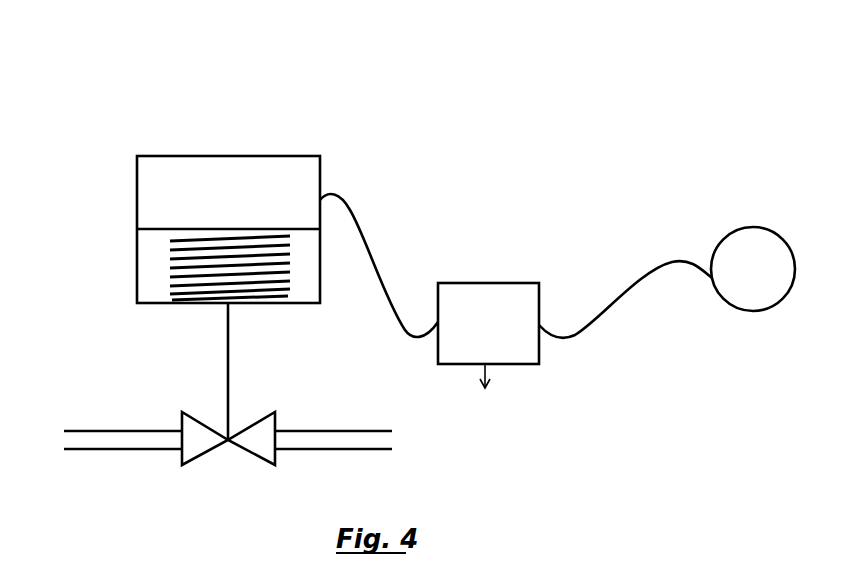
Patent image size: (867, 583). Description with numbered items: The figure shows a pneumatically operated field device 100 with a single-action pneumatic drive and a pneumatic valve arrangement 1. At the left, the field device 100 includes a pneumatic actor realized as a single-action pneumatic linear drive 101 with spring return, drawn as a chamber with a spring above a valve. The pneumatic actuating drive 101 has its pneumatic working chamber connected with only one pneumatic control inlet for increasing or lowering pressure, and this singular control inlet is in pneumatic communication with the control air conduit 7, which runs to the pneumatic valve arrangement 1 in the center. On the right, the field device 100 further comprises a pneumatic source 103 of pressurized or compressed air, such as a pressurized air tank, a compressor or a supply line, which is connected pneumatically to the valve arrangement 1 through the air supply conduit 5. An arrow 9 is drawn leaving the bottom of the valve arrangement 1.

The field device 100 is at (176, 100).
The single-action pneumatic linear drive 101 is at (137, 240).
The control air conduit 7 is at (378, 265).
The pneumatic valve arrangement 1 is at (483, 337).
The output signal 9 is at (488, 372).
The air supply conduit 5 is at (661, 262).
The pneumatic source 103 is at (772, 283).